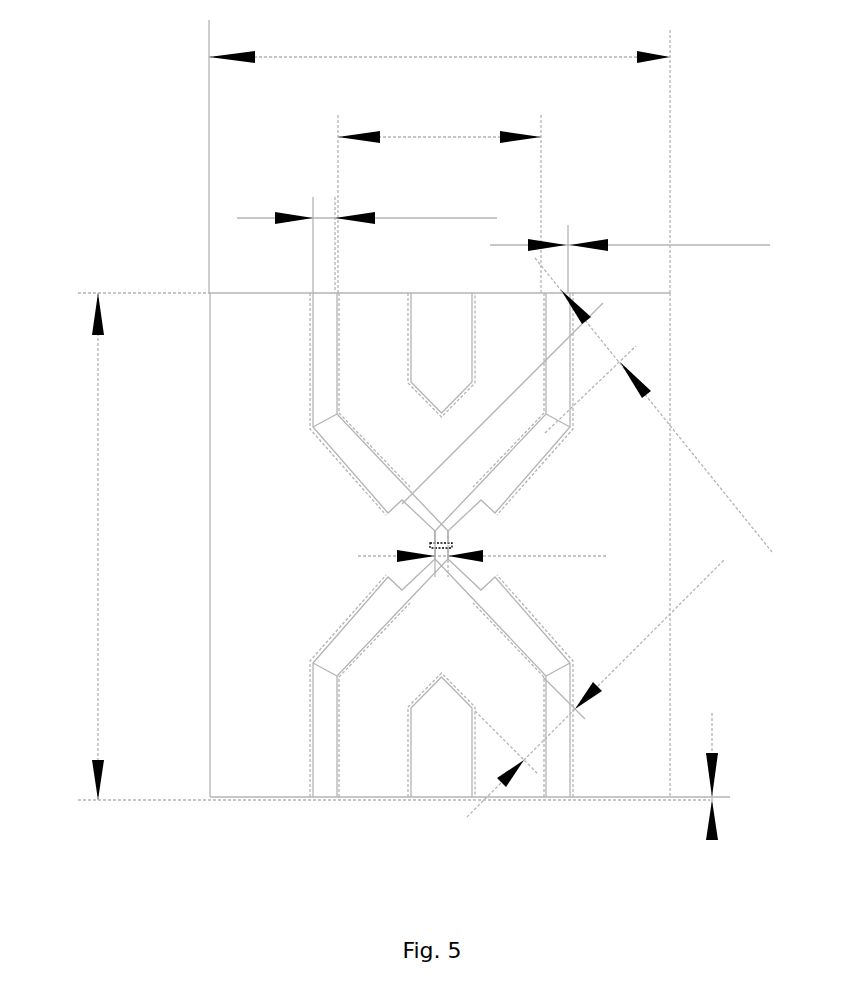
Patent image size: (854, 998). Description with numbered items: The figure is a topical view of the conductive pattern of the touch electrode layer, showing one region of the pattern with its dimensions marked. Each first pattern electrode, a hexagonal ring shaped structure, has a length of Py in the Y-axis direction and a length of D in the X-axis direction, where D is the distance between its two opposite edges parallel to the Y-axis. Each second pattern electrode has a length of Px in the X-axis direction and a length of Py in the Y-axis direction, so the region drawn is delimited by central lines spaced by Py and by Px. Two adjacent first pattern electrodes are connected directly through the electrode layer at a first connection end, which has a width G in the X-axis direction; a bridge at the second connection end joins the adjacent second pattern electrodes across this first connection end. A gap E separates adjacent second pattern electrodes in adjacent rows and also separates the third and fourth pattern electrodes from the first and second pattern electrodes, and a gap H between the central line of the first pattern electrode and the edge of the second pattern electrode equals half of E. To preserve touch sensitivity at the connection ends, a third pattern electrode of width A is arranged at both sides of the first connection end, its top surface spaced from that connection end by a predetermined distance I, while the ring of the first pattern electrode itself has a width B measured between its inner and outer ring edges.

The length of second pattern electrode in X-axis direction Px is at (439, 146).
The length of first pattern electrode in Y-axis direction Py is at (369, 546).
The length of first pattern electrode in X-axis direction D is at (439, 180).
The width of third pattern electrode A is at (367, 224).
The gap E is at (630, 238).
The width of first connection end G is at (482, 536).
The width of first pattern electrode B is at (596, 688).
The predetermined distance I is at (657, 405).
The gap H is at (682, 800).